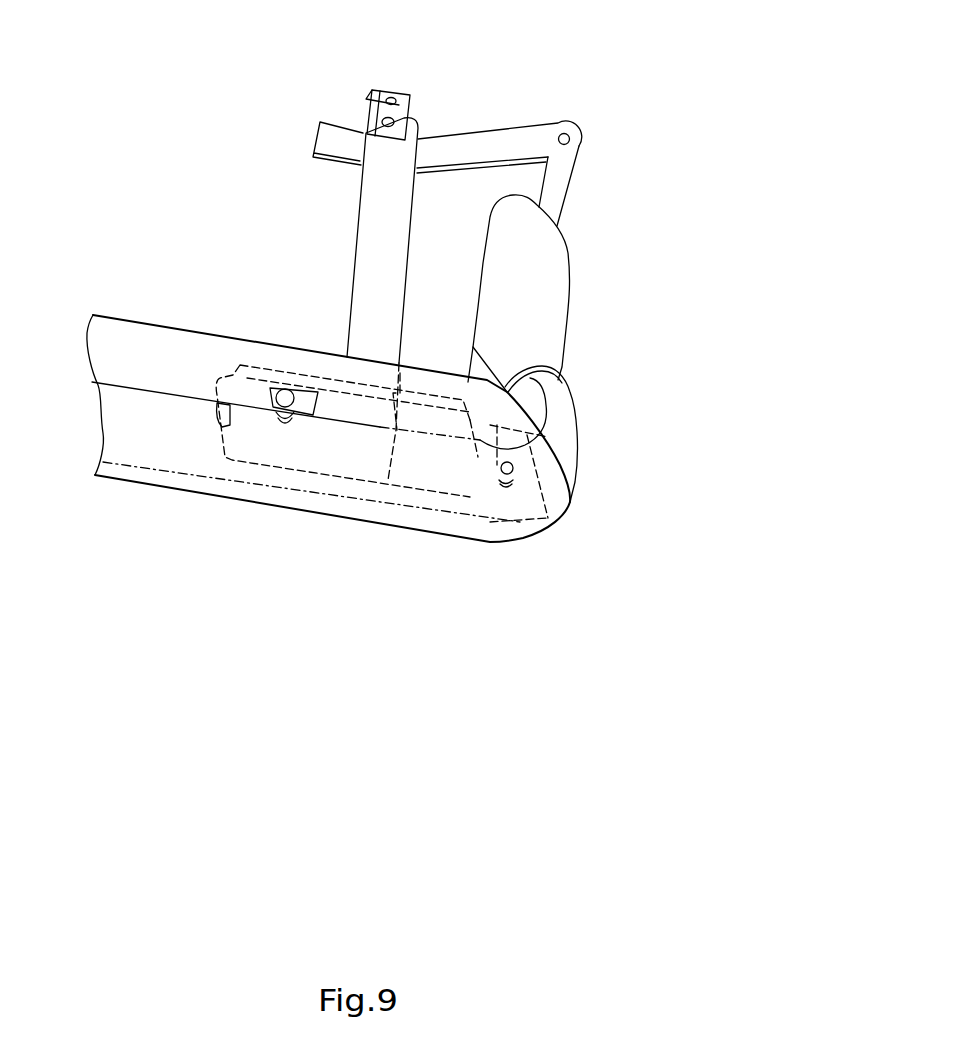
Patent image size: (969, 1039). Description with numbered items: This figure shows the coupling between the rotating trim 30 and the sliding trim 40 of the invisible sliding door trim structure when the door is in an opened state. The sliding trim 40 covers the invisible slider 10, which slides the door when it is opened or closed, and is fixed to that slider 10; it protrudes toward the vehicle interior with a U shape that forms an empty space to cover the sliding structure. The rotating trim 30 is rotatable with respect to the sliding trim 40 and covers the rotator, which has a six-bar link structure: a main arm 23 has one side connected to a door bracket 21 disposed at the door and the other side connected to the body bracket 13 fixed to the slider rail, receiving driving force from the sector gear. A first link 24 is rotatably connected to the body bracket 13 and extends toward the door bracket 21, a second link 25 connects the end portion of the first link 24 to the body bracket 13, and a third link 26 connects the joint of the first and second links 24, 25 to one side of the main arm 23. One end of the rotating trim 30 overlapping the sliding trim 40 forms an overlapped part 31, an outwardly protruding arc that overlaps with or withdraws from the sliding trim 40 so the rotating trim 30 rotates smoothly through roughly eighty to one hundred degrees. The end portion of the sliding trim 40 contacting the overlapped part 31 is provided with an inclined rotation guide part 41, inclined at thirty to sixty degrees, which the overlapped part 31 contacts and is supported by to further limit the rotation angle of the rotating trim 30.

The invisible slider 10 is at (266, 423).
The body bracket 13 is at (452, 463).
The door bracket 21 is at (482, 147).
The main arm 23 is at (357, 233).
The first link 24 is at (510, 456).
The second link 25 is at (557, 178).
The third link 26 is at (433, 385).
The rotating trim 30 is at (553, 297).
The overlapped part 31 is at (557, 407).
The sliding trim 40 is at (303, 480).
The rotation guide part 41 is at (562, 440).